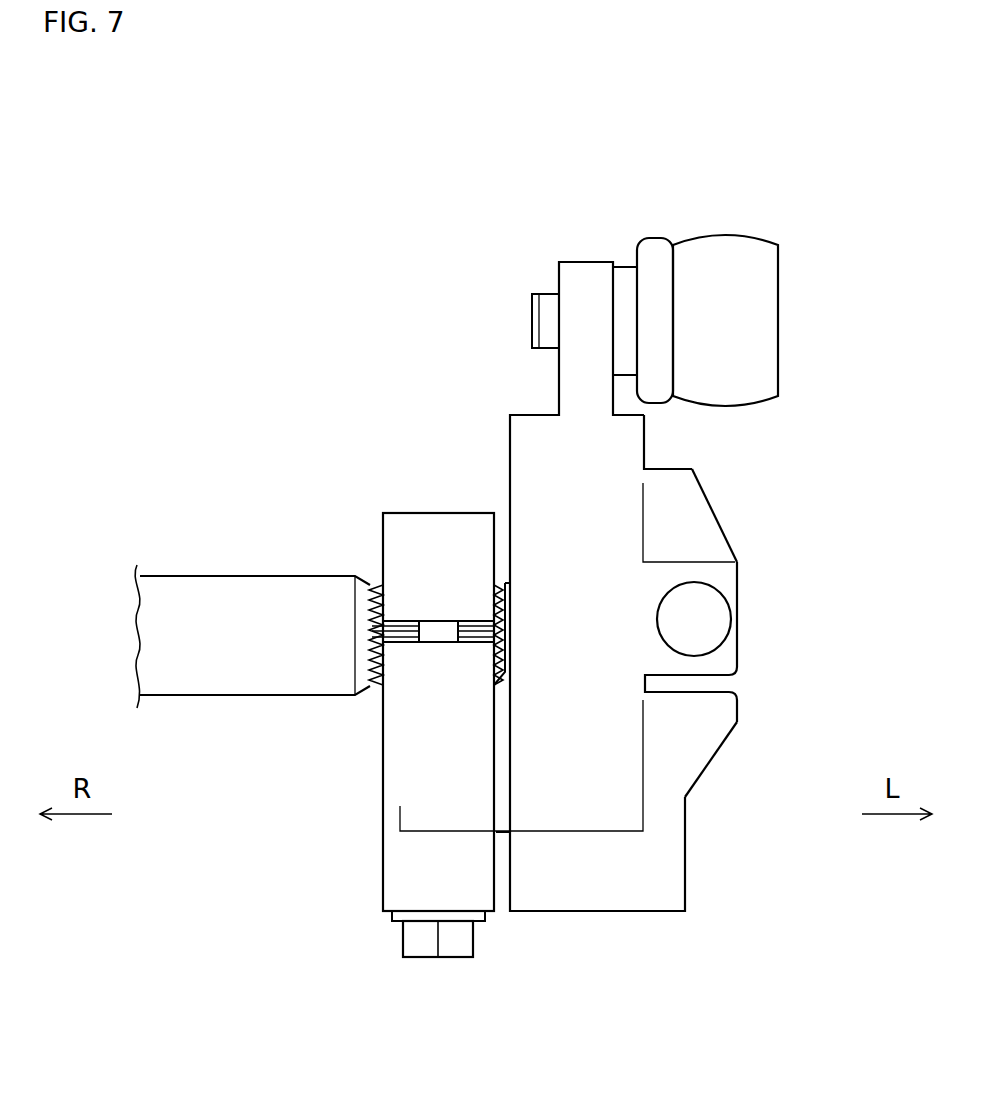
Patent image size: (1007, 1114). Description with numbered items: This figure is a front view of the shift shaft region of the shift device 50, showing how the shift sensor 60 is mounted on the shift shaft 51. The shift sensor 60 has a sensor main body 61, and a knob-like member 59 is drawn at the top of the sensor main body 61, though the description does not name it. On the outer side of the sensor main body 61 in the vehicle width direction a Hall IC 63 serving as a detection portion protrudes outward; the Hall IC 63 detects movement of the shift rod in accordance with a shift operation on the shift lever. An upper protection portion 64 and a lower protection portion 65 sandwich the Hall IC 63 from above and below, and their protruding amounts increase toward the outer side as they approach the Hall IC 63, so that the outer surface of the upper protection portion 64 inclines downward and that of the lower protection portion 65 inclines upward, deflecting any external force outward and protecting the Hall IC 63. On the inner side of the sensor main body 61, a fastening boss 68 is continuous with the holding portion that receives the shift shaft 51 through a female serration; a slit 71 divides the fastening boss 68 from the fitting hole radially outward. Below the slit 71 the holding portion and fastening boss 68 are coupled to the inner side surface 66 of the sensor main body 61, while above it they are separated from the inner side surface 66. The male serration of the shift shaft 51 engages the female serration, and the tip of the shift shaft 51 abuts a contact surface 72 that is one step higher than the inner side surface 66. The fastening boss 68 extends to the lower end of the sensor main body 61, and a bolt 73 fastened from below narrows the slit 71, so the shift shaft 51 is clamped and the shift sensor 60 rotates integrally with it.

The shift device 50 is at (238, 130).
The shift shaft 51 is at (228, 575).
The knob 59 is at (718, 245).
The shift sensor 60 is at (483, 369).
The sensor main body 61 is at (655, 487).
The Hall IC 63 is at (738, 601).
The upper protection portion 64 is at (725, 528).
The lower protection portion 65 is at (723, 745).
The inner side surface 66 is at (508, 470).
The fastening boss 68 is at (410, 531).
The slit 71 is at (440, 618).
The contact surface 72 is at (492, 607).
The bolt 73 is at (420, 958).